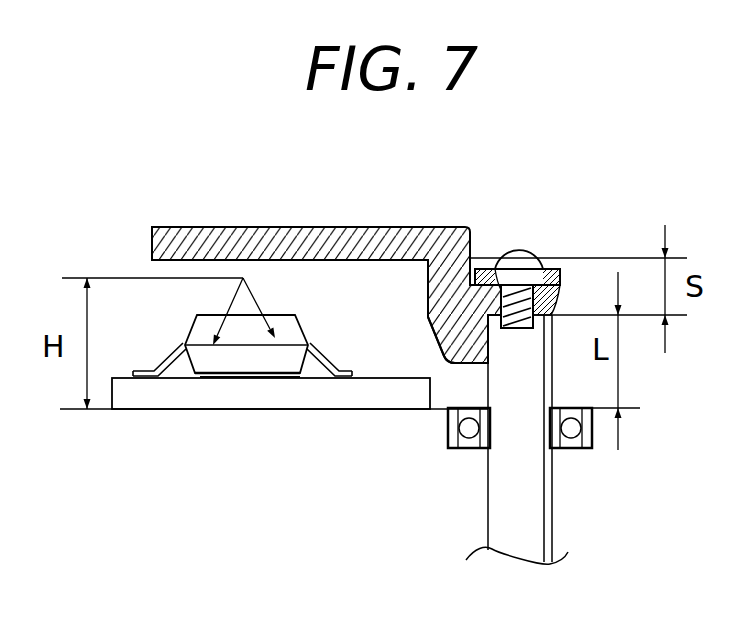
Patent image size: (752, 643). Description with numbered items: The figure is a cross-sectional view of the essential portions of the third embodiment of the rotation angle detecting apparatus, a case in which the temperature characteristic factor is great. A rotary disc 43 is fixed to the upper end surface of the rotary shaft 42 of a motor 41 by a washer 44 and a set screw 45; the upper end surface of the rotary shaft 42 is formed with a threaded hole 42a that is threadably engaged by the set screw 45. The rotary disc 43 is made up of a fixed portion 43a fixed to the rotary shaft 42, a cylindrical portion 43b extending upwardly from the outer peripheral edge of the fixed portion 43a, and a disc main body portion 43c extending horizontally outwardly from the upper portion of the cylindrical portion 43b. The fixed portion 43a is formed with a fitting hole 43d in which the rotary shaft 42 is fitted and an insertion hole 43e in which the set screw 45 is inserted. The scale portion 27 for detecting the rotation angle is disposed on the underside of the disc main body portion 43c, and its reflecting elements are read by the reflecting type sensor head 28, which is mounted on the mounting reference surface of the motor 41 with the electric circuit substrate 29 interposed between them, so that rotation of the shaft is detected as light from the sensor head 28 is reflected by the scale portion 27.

The scale portion for detecting the rotation angle 27 is at (243, 278).
The reflecting type sensor head 28 is at (190, 323).
The electric circuit substrate 29 is at (245, 402).
The motor 41 is at (478, 527).
The rotary shaft 42 is at (540, 388).
The threaded hole 42a is at (558, 290).
The rotary disc 43 is at (171, 217).
The fixed portion 43a is at (455, 345).
The cylindrical portion 43b is at (428, 270).
The disc main body portion 43c is at (365, 227).
The fitting hole 43d is at (488, 350).
The insertion hole 43e is at (500, 262).
The washer 44 is at (557, 268).
The set screw 45 is at (517, 250).